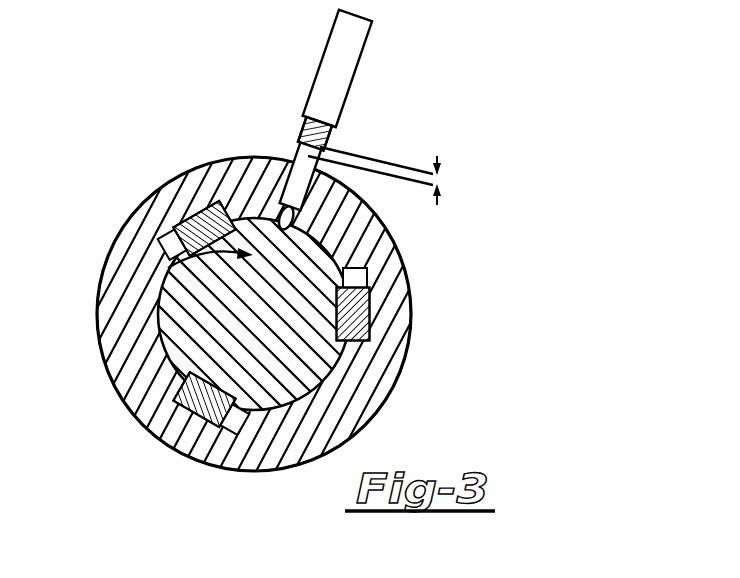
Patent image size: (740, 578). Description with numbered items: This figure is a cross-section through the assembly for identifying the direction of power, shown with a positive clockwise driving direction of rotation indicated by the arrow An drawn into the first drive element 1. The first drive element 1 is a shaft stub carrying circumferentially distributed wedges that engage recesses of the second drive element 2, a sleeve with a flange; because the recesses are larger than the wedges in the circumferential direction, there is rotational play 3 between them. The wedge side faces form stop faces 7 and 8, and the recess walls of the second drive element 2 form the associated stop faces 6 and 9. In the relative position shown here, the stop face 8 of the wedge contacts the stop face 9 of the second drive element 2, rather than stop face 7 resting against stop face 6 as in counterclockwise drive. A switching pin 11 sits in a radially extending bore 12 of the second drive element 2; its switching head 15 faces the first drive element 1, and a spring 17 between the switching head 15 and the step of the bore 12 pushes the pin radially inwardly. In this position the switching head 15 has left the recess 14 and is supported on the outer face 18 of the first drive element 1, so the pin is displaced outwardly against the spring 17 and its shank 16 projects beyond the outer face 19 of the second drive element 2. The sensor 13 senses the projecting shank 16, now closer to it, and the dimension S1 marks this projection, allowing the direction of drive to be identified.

The first drive element 1 is at (241, 321).
The second drive element 2 is at (300, 314).
The rotational play 3 is at (213, 420).
The stop face of the second drive element 6 is at (164, 179).
The stop face of the wedge 7 is at (169, 179).
The stop face of the wedge 8 is at (192, 179).
The stop face of the second drive element 9 is at (203, 205).
The switching pin 11 is at (333, 172).
The bore 12 is at (289, 225).
The sensor 13 is at (342, 62).
The recess 14 is at (278, 212).
The switching head 15 is at (383, 240).
The shank 16 is at (325, 150).
The spring 17 is at (346, 199).
The outer face of the first drive element 18 is at (340, 362).
The outer face of the second drive element 19 is at (300, 314).
The spacing S1 is at (455, 180).
The driving direction of rotation arrow An is at (210, 279).